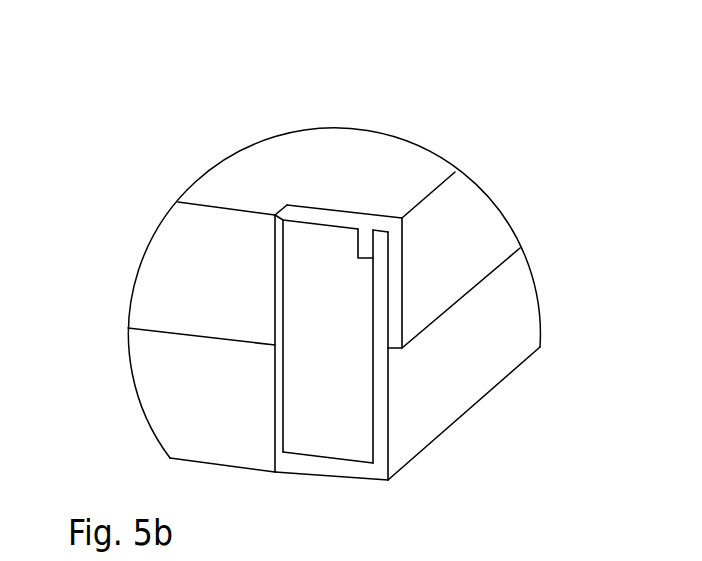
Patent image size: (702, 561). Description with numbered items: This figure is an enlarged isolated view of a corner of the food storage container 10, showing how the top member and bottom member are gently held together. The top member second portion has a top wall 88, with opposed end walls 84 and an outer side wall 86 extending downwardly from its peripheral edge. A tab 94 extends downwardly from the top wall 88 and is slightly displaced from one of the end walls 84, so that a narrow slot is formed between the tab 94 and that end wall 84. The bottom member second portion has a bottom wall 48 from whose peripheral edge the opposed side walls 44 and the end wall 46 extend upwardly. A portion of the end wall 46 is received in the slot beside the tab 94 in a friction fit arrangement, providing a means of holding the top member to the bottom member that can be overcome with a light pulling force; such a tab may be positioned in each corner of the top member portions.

The food storage container 10 is at (598, 548).
The side walls 44 is at (176, 421).
The end wall 46 is at (380, 403).
The bottom wall 48 is at (320, 466).
The end walls 84 is at (477, 232).
The outer side wall 86 is at (175, 247).
The top wall 88 is at (398, 158).
The tab 94 is at (362, 248).